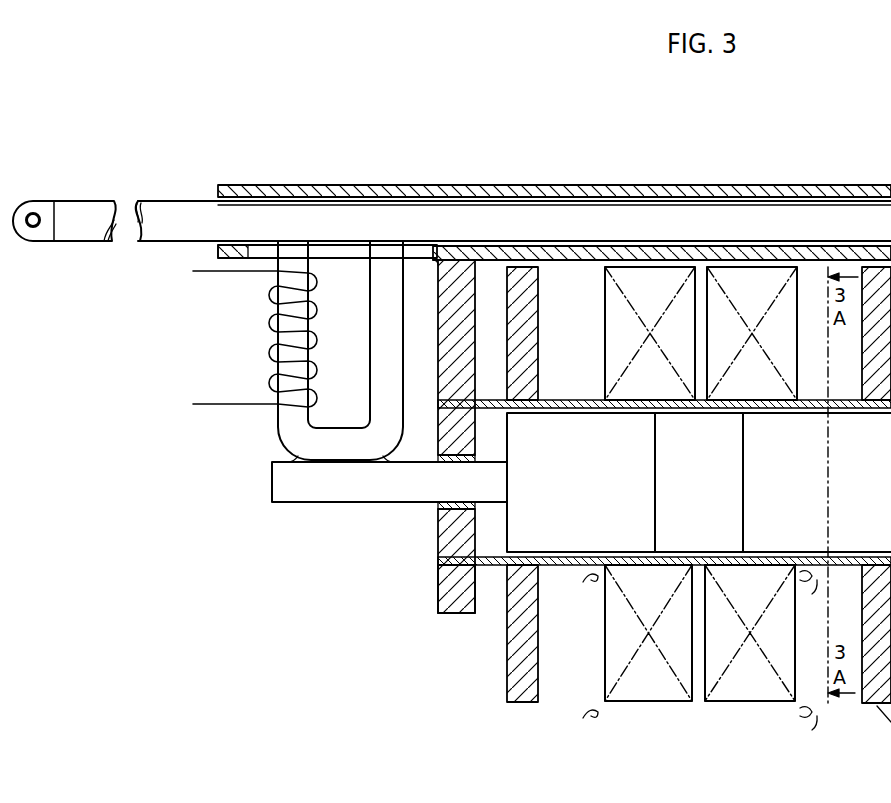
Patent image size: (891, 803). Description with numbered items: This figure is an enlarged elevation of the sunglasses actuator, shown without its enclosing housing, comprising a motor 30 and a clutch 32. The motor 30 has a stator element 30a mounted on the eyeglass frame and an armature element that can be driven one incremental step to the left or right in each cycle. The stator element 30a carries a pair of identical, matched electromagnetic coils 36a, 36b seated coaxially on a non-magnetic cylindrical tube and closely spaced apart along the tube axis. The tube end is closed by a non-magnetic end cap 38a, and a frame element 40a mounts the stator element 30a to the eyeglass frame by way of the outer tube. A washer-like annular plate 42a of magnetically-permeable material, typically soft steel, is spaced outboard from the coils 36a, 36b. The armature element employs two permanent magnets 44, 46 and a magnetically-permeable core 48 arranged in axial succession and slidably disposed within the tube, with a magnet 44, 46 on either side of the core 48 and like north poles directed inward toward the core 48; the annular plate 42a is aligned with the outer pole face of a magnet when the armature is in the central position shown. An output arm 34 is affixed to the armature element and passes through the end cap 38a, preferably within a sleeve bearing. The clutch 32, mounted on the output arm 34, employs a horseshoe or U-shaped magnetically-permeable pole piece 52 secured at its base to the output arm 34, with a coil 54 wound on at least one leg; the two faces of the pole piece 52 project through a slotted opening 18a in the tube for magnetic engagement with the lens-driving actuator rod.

The slotted opening 18a is at (263, 253).
The pole piece 52 is at (383, 315).
The coil 54 is at (270, 352).
The clutch 32 is at (272, 439).
The output arm 34 is at (303, 494).
The motor 30 is at (437, 525).
The stator element 30a is at (703, 722).
The end cap 38a is at (445, 541).
The frame element 40a is at (446, 592).
The annular plate 42a is at (520, 704).
The electromagnetic coil 36a is at (620, 704).
The electromagnetic coil 36b is at (725, 704).
The permanent magnet 44 is at (589, 495).
The permanent magnet 46 is at (817, 495).
The core 48 is at (713, 495).